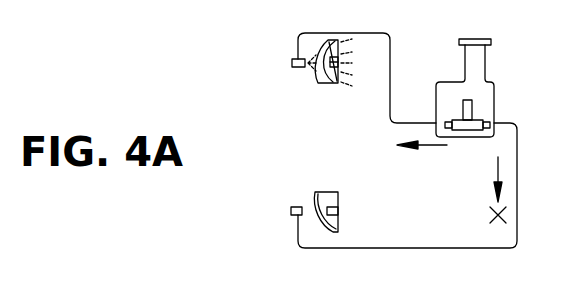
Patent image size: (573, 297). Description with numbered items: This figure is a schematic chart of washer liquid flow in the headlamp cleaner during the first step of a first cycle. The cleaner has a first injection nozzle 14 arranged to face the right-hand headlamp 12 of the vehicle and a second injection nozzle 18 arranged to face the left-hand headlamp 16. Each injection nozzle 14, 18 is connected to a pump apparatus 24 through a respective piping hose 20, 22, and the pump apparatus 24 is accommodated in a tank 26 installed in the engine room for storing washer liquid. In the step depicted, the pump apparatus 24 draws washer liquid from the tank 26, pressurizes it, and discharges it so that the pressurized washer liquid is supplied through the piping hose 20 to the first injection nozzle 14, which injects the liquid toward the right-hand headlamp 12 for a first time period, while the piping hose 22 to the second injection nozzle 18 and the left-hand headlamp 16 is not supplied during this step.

The right-hand headlamp 12 is at (340, 84).
The first injection nozzle 14 is at (291, 64).
The left-hand headlamp 16 is at (333, 192).
The second injection nozzle 18 is at (291, 212).
The piping hose 20 is at (372, 33).
The piping hose 22 is at (467, 248).
The pump apparatus 24 is at (451, 182).
The tank 26 is at (484, 98).